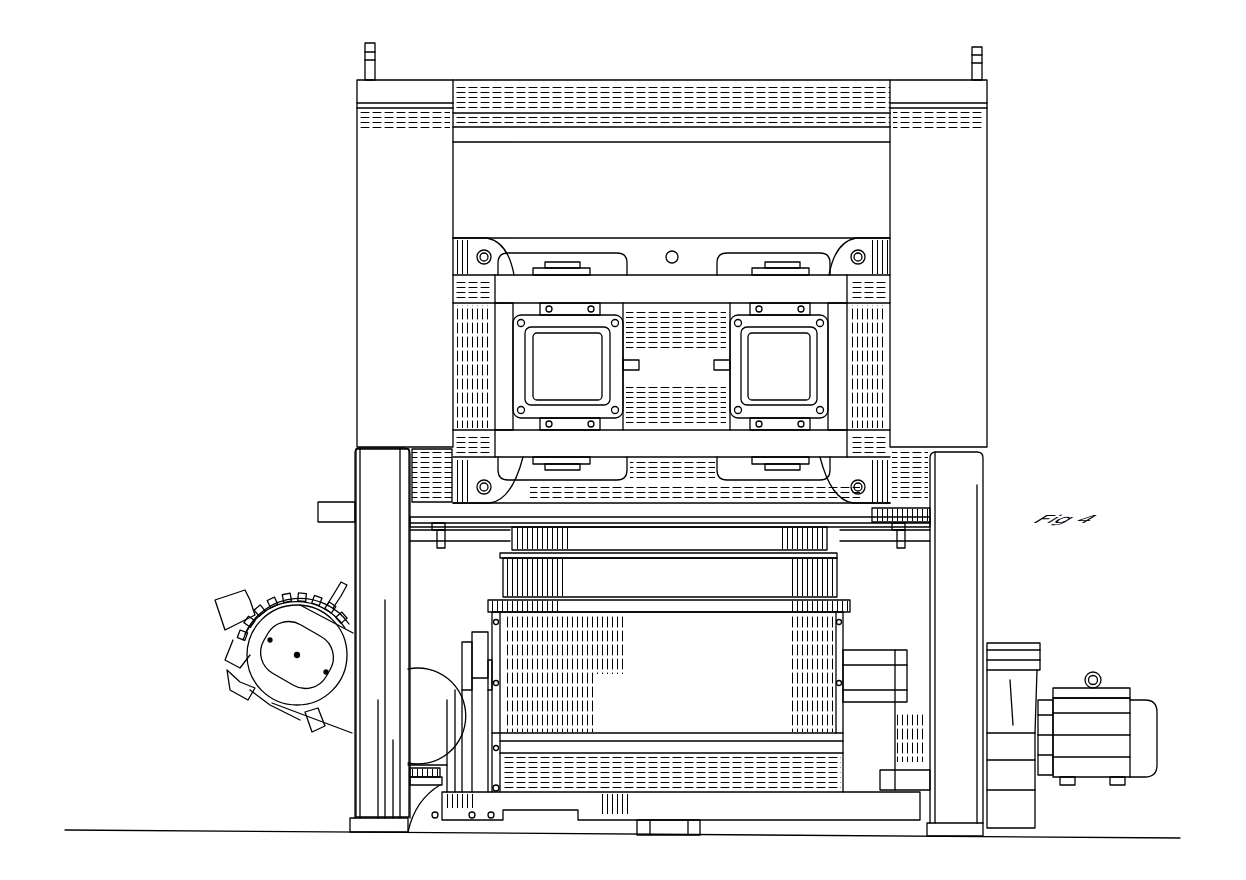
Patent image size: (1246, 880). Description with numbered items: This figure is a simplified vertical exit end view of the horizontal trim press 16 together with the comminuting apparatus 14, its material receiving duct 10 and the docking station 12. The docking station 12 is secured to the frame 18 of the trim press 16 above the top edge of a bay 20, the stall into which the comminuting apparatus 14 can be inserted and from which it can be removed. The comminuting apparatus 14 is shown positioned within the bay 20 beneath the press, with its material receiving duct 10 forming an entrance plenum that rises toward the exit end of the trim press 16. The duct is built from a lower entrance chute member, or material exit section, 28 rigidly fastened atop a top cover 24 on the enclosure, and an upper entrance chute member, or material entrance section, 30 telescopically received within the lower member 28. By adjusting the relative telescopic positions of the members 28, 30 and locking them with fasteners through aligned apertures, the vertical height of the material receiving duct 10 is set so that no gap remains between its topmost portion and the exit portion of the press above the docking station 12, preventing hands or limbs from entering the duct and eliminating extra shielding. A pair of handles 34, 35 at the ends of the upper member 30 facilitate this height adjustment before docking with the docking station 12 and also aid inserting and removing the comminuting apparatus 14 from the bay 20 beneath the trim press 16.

The material receiving duct 10 is at (473, 597).
The docking station 12 is at (418, 517).
The comminuting apparatus 14 is at (186, 608).
The horizontal trim press 16 is at (1022, 232).
The frame 18 is at (352, 473).
The bay 20 is at (322, 548).
The top cover 24 is at (650, 605).
The lower entrance chute member 28 is at (763, 595).
The upper entrance chute member 30 is at (757, 543).
The handle 34 is at (438, 532).
The handle 35 is at (897, 542).